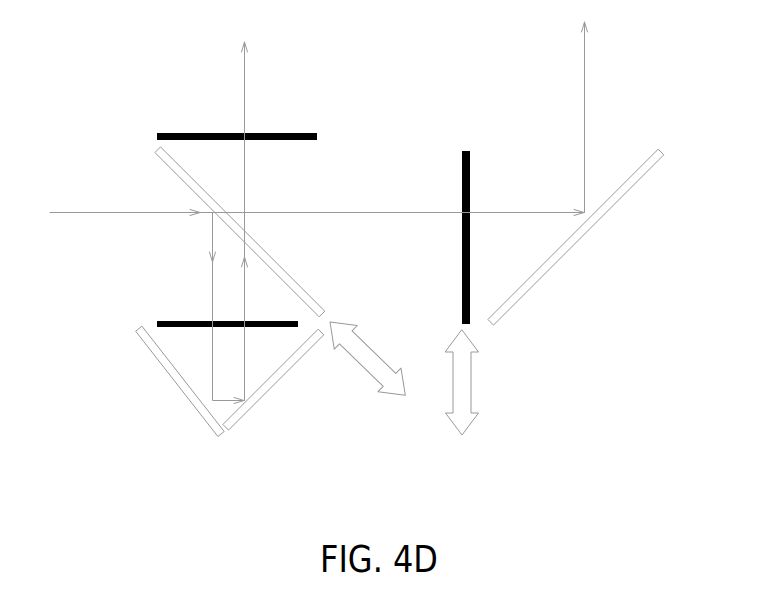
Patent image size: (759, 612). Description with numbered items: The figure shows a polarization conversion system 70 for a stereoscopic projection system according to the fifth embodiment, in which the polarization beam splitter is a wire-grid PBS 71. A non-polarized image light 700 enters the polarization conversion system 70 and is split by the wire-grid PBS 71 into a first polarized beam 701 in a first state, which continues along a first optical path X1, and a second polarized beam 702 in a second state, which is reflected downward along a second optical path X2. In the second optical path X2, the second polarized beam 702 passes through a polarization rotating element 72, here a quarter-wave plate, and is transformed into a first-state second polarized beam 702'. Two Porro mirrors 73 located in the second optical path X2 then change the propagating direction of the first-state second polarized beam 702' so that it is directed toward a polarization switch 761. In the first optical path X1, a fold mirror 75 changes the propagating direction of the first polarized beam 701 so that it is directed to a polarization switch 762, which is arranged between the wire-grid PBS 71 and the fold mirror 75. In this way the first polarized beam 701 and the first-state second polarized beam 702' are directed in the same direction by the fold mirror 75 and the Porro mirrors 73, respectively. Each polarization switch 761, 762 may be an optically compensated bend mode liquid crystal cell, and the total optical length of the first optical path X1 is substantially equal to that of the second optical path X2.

The polarization conversion system 70 is at (744, 60).
The non-polarized image light 700 is at (126, 212).
The wire-grid PBS 71 is at (158, 151).
The polarization switch 761 is at (271, 134).
The polarization switch 762 is at (470, 180).
The polarization rotating element 72 is at (260, 330).
The Porro mirrors 73 is at (247, 413).
The fold mirror 75 is at (638, 181).
The first polarized beam 701 is at (508, 213).
The second polarized beam 702 is at (183, 363).
The first-state second polarized beam 702' is at (212, 269).
The first optical path X1 is at (542, 212).
The second optical path X2 is at (212, 271).